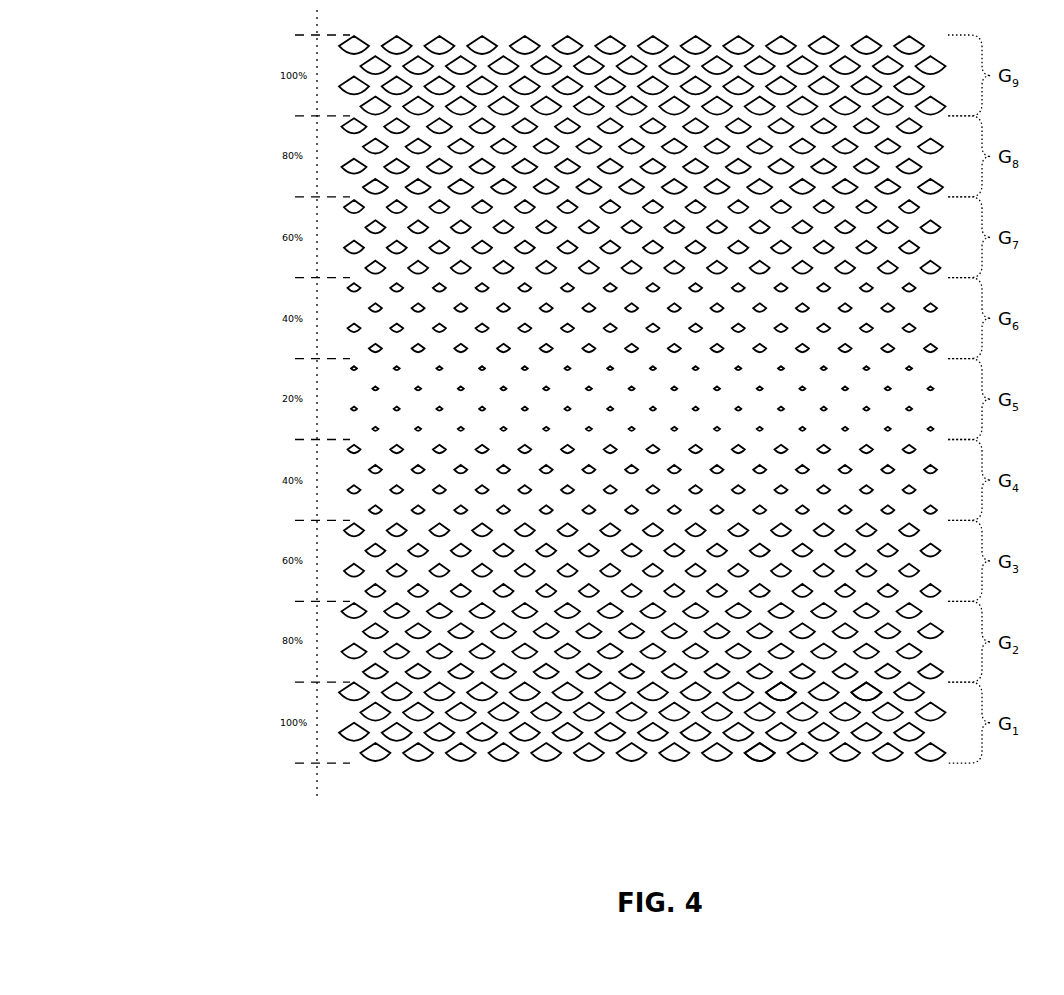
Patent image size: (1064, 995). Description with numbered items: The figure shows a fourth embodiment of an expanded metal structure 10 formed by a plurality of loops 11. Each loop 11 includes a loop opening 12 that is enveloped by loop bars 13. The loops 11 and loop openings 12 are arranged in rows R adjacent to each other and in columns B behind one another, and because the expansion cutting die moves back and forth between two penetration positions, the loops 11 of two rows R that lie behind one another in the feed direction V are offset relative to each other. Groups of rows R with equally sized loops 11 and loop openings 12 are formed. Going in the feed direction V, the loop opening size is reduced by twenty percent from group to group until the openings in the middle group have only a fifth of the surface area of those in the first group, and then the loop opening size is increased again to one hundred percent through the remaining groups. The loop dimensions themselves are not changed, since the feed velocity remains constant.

The expanded metal structure 10 is at (190, 622).
The loop 11 is at (745, 769).
The loop opening 12 is at (867, 697).
The loop bar 13 is at (774, 696).
The row R is at (329, 247).
The feed direction V is at (157, 355).
The column B is at (547, 780).